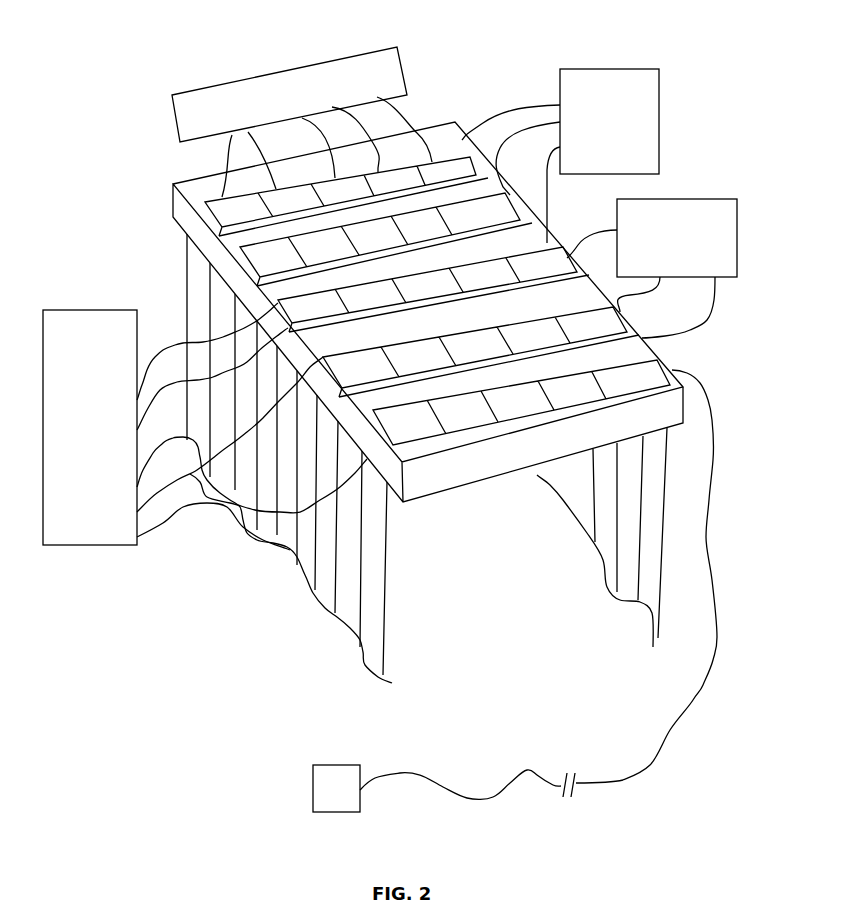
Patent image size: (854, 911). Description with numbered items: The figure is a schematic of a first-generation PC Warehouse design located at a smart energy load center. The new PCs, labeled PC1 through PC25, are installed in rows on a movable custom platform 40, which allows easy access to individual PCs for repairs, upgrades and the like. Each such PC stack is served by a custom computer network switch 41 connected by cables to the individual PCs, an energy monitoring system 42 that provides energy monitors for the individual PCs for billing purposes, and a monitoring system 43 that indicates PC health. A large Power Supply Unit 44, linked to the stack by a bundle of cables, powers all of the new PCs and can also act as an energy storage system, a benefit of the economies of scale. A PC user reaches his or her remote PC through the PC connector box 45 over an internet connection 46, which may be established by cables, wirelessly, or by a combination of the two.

The movable custom platform 40 is at (262, 320).
The custom computer network switch 41 is at (283, 72).
The energy monitoring system 42 is at (605, 69).
The PC health monitoring system 43 is at (684, 199).
The large Power Supply Unit 44 is at (80, 545).
The PC connector box 45 is at (313, 785).
The internet connection 46 is at (623, 780).